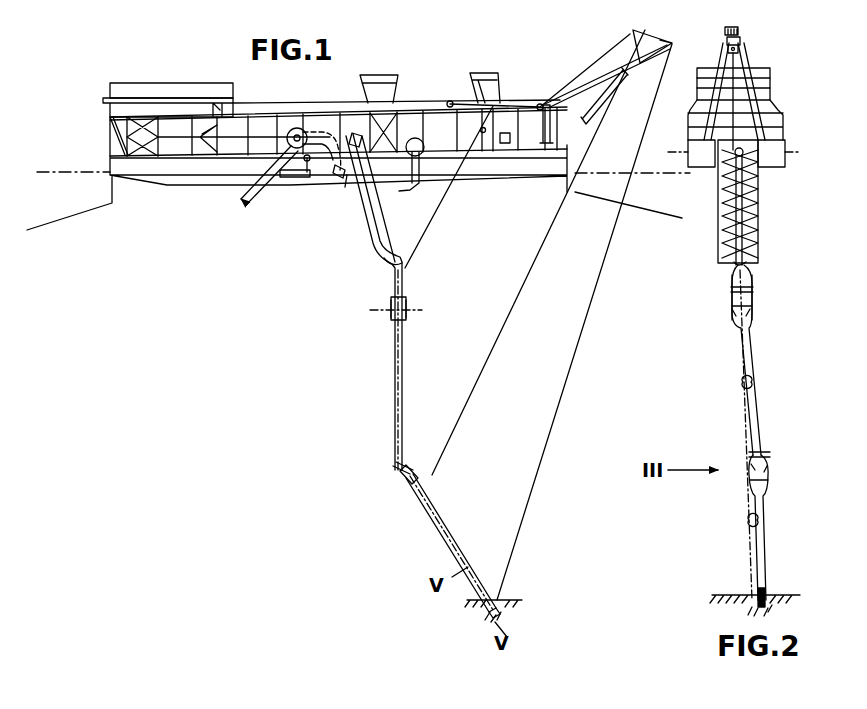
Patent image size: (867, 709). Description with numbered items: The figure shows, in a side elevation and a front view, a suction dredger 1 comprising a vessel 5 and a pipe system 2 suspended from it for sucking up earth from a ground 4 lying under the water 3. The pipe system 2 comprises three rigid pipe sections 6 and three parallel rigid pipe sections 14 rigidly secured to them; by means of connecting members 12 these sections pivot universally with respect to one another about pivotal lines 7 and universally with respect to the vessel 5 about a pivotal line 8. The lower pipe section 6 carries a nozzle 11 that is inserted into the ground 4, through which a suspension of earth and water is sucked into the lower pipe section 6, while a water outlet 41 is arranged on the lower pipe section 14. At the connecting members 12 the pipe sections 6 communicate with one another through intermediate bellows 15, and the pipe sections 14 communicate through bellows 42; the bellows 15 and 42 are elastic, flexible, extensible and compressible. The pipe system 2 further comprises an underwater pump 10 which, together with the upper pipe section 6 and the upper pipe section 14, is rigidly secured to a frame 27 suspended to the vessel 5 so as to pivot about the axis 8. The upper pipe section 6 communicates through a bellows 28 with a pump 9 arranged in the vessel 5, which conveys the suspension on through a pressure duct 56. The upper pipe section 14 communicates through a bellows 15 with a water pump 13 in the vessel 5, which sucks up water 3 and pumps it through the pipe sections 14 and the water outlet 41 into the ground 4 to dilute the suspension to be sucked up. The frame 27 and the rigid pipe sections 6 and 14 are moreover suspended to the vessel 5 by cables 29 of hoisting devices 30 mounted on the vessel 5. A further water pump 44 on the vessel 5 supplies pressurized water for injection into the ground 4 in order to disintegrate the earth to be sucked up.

In FIG. 1, the suction dredger 1 is at (100, 98).
In FIG. 2, the suction dredger 1 is at (751, 50).
In FIG. 1, the pipe system 2 is at (425, 278).
In FIG. 1, the water 3 is at (657, 160).
In FIG. 1, the ground 4 is at (508, 600).
In FIG. 2, the ground 4 is at (735, 593).
In FIG. 1, the vessel 5 is at (235, 178).
In FIG. 2, the vessel 5 is at (703, 152).
In FIG. 1, the rigid pipe sections 6 is at (367, 210).
In FIG. 2, the rigid pipe sections 6 is at (736, 228).
In FIG. 1, the pivotal lines 7 is at (420, 312).
In FIG. 2, the pivotal lines 7 is at (722, 302).
In FIG. 1, the pivotal line 8 is at (346, 190).
In FIG. 1, the pump 9 is at (307, 172).
In FIG. 1, the underwater pump 10 is at (398, 258).
In FIG. 2, the underwater pump 10 is at (760, 262).
In FIG. 1, the nozzle 11 is at (514, 603).
In FIG. 2, the nozzle 11 is at (765, 608).
In FIG. 1, the connecting members 12 is at (340, 172).
In FIG. 2, the connecting members 12 is at (736, 313).
In FIG. 1, the water pump 13 is at (298, 128).
In FIG. 2, the parallel rigid pipe sections 14 is at (746, 208).
In FIG. 1, the bellows 15 is at (327, 130).
In FIG. 2, the bellows 15 is at (748, 294).
In FIG. 2, the frame 27 is at (762, 212).
In FIG. 1, the bellows 28 is at (343, 145).
In FIG. 1, the cables 29 is at (445, 208).
In FIG. 2, the cables 29 is at (712, 108).
In FIG. 1, the hoisting devices 30 is at (618, 40).
In FIG. 2, the water outlet 41 is at (776, 590).
In FIG. 2, the bellows 42 is at (752, 305).
In FIG. 1, the water pump 44 is at (417, 139).
In FIG. 1, the pressure duct 56 is at (290, 177).